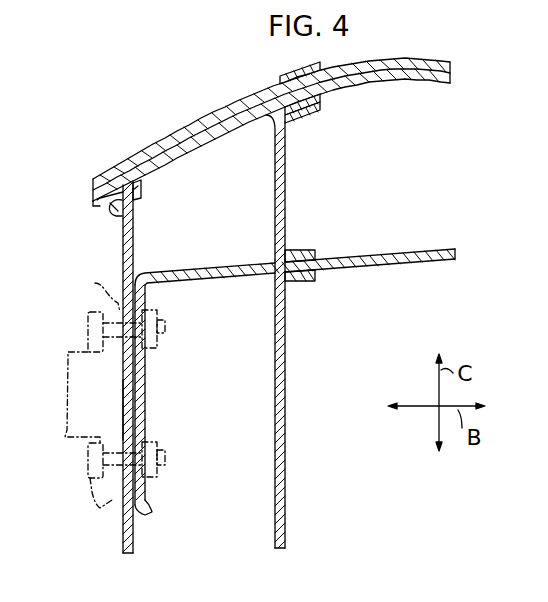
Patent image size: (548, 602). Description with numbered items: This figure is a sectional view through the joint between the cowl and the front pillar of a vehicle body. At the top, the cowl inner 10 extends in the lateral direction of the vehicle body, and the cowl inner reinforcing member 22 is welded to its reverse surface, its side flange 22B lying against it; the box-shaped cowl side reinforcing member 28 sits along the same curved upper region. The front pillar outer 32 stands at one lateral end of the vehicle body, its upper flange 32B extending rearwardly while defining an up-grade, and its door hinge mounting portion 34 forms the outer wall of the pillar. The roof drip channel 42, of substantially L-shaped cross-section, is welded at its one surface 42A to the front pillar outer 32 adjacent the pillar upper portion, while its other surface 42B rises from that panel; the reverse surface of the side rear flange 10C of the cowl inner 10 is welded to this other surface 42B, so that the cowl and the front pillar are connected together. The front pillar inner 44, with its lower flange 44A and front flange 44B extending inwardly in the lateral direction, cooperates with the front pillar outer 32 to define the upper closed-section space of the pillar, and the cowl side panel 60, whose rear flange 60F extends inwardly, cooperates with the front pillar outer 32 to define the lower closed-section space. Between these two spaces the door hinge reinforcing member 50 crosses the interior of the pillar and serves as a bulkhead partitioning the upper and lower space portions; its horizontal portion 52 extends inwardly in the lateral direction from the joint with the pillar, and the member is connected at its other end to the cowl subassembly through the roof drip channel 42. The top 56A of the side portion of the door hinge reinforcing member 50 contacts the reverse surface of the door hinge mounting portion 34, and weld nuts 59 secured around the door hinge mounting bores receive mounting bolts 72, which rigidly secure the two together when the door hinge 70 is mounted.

The cowl inner 10 is at (440, 63).
The side rear flange 10C is at (95, 178).
The cowl inner reinforcing member 22 is at (450, 83).
The side flange 22B is at (320, 100).
The cowl side reinforcing member 28 is at (160, 133).
The front pillar outer 32 is at (135, 236).
The upper flange 32B is at (283, 80).
The door hinge mounting portion 34 is at (123, 410).
The roof drip channel 42 is at (93, 205).
The one surface 42A is at (136, 200).
The other surface 42B is at (100, 205).
The front pillar inner 44 is at (285, 186).
The lower flange 44A is at (298, 252).
The front flange 44B is at (317, 118).
The door hinge reinforcing member 50 is at (233, 263).
The horizontal portion 52 is at (392, 252).
The top 56A is at (146, 374).
The weld nuts 59 is at (158, 318).
The cowl side panel 60 is at (285, 368).
The rear flange 60F is at (305, 282).
The door hinge 70 is at (65, 438).
The mounting bolts 72 is at (88, 322).